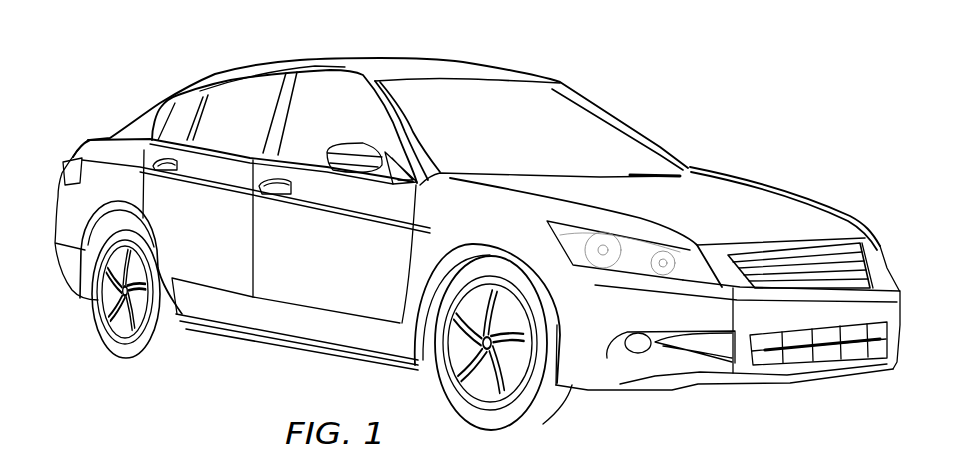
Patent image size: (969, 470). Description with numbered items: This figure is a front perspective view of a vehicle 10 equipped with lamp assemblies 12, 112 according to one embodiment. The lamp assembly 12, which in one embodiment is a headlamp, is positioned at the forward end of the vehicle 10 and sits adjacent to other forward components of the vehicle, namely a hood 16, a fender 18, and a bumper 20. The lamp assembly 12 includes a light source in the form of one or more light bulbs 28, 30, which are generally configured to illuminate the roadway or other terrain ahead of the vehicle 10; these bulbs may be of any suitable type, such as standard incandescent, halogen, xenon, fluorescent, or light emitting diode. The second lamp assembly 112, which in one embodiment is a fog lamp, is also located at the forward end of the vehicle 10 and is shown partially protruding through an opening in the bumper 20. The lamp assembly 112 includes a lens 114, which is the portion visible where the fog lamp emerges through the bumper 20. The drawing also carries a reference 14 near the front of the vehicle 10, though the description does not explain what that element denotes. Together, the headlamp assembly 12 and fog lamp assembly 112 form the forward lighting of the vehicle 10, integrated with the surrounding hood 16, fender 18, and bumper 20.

The vehicle 10 is at (703, 79).
The lamp assembly 12 is at (559, 248).
The grille 14 is at (693, 267).
The hood 16 is at (787, 215).
The fender 18 is at (592, 222).
The bumper 20 is at (688, 317).
The light bulb 28 is at (603, 252).
The light bulb 30 is at (673, 258).
The lamp assembly 112 is at (647, 352).
The lens 114 is at (640, 352).